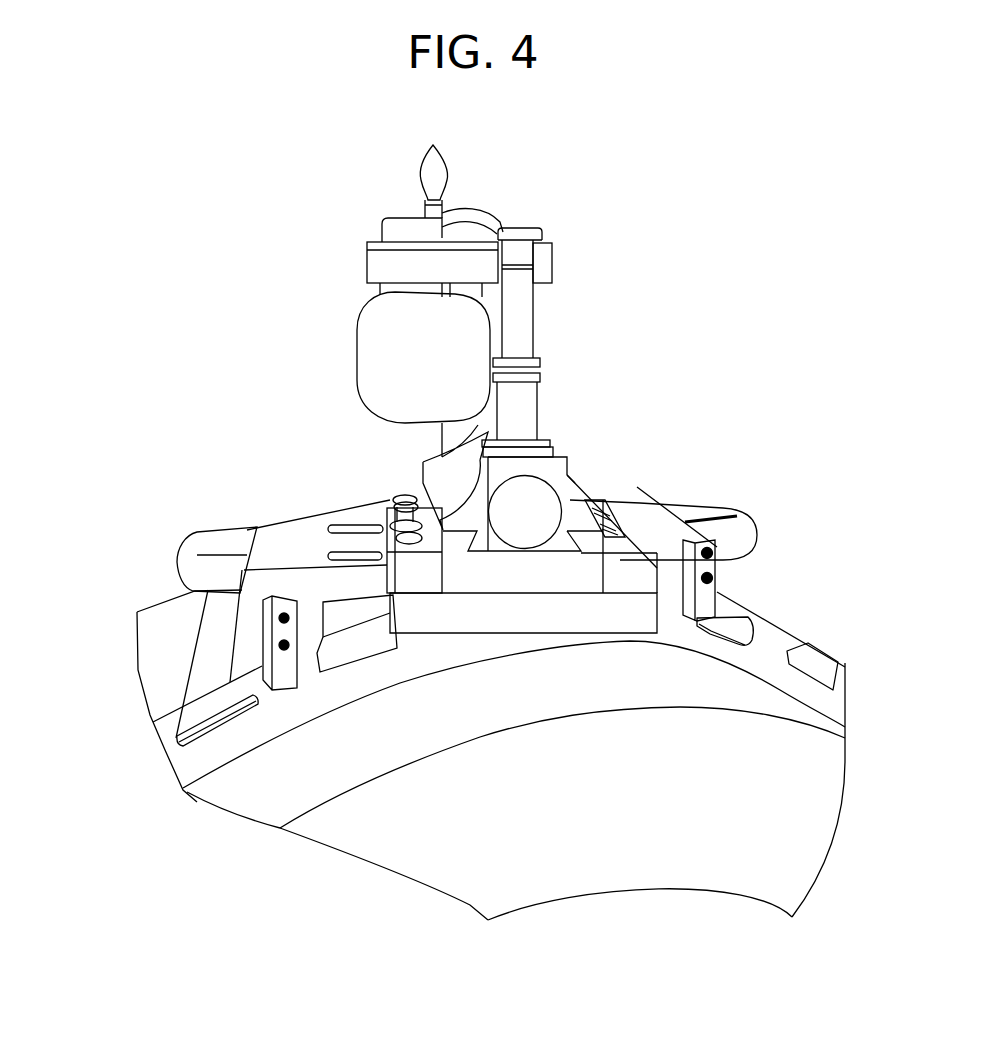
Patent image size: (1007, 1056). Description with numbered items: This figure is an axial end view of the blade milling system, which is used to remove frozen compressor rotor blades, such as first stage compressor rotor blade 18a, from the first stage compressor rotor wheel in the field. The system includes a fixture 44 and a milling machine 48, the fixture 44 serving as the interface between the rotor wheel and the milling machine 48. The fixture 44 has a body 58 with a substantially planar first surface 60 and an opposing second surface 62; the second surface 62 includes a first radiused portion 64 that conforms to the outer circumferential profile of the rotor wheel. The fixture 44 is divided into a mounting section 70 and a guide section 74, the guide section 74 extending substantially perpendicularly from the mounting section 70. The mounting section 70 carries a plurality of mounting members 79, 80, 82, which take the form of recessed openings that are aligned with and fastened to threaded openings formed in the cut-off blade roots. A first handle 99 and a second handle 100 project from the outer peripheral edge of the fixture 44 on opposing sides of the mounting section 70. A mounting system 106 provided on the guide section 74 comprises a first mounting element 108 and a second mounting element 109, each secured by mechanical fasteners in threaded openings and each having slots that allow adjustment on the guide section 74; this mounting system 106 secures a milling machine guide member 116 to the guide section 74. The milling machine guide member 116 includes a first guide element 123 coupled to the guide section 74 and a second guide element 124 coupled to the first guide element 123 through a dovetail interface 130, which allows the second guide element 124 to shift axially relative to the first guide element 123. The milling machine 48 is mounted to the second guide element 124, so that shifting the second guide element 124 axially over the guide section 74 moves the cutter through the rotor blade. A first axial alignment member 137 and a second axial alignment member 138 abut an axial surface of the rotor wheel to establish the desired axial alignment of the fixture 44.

The milling machine 48 is at (350, 300).
The fixture 44 is at (266, 470).
The mounting section 70 is at (299, 490).
The first mounting element 108 is at (372, 527).
The mounting member 79 is at (313, 522).
The mounting member 80 is at (305, 543).
The first surface 60 is at (207, 528).
The first handle 99 is at (180, 558).
The body 58 is at (220, 603).
The first radiused portion 64 is at (247, 622).
The second surface 62 is at (342, 600).
The first axial alignment member 137 is at (293, 690).
The first stage compressor rotor blade 18a is at (340, 665).
The first guide element 123 is at (470, 583).
The milling machine guide member 116 is at (565, 588).
The dovetail interface 130 is at (598, 575).
The guide section 74 is at (685, 646).
The second guide element 124 is at (572, 507).
The mounting system 106 is at (638, 490).
The mounting member 82 is at (658, 516).
The second mounting element 109 is at (737, 516).
The second handle 100 is at (752, 540).
The second axial alignment member 138 is at (707, 602).